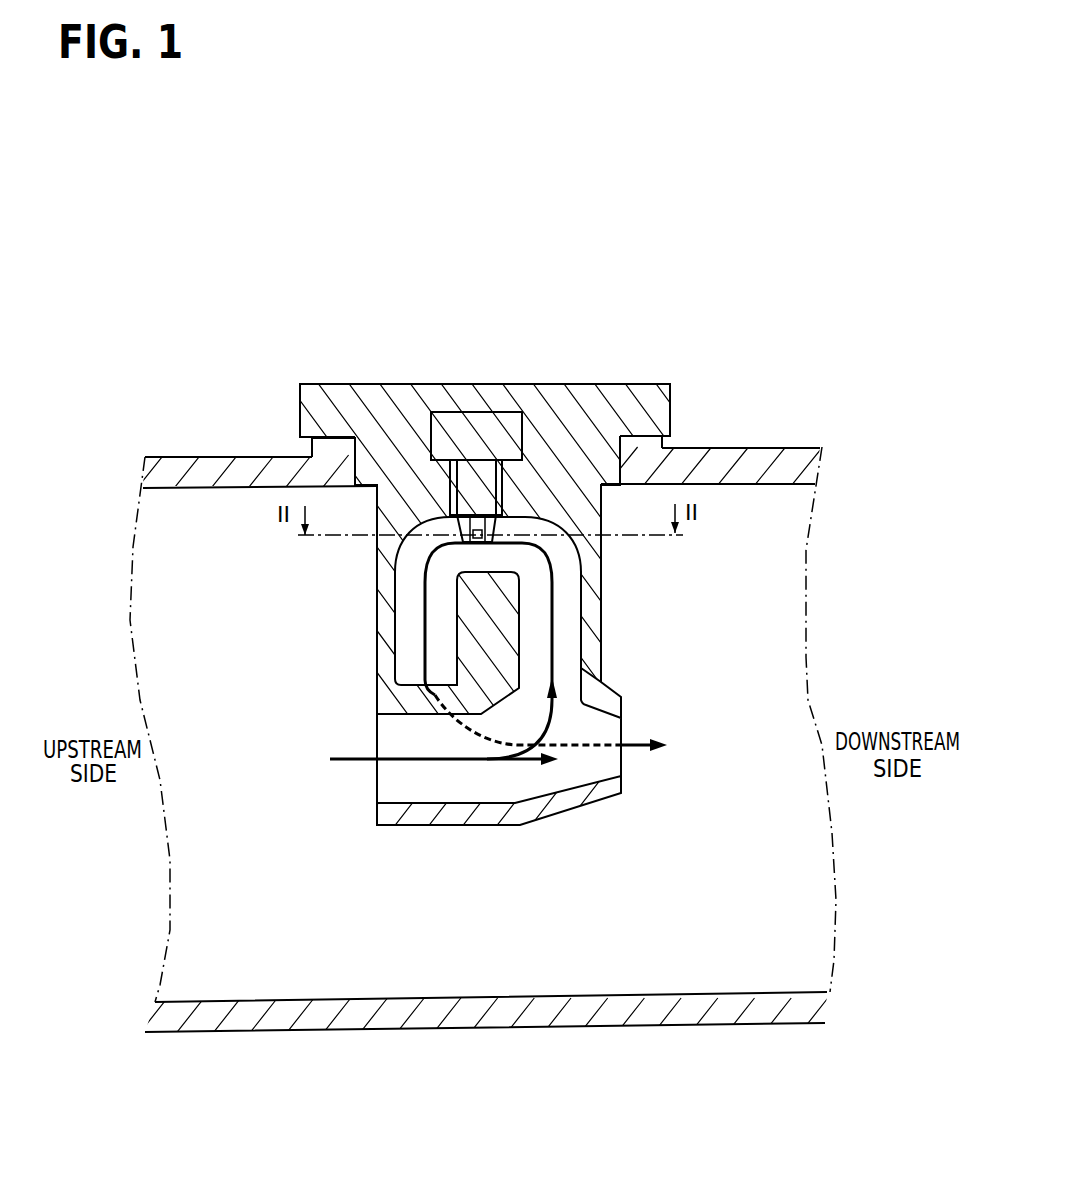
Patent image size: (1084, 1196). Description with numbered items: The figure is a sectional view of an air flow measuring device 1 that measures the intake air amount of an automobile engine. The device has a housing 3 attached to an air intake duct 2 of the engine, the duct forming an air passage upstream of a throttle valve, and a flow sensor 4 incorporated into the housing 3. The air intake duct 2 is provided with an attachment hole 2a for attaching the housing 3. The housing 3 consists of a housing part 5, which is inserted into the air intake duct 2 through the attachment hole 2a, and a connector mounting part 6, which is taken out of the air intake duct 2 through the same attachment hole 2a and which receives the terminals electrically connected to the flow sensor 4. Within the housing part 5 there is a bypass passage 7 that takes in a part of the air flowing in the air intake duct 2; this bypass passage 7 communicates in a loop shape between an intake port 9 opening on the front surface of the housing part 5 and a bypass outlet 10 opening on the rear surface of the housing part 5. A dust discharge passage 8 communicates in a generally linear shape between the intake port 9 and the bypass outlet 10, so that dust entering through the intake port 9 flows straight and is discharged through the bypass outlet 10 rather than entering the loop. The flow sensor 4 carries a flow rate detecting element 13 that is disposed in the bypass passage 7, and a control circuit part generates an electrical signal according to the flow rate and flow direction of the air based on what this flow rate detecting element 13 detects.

The air flow measuring device 1 is at (595, 322).
The air intake duct 2 is at (210, 468).
The attachment hole 2a is at (368, 447).
The housing 3 is at (757, 329).
The flow sensor 4 is at (426, 464).
The housing part 5 is at (575, 510).
The connector mounting part 6 is at (623, 413).
The bypass passage 7 is at (562, 630).
The dust discharge passage 8 is at (512, 780).
The intake port 9 is at (378, 783).
The bypass outlet 10 is at (625, 760).
The flow rate detecting element 13 is at (473, 545).